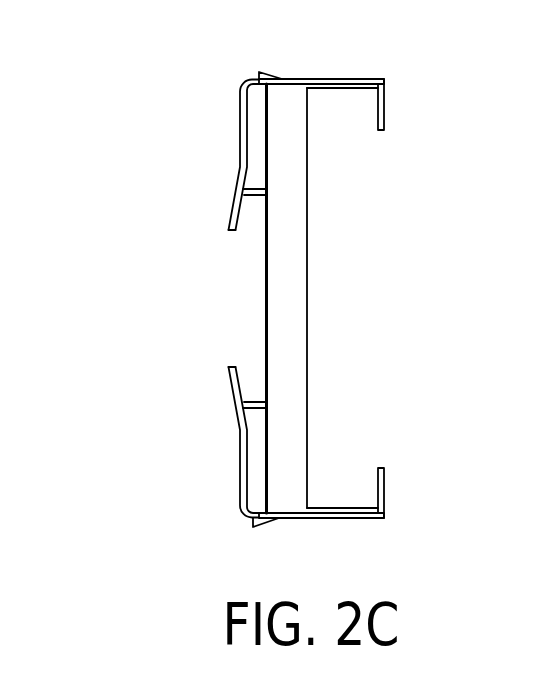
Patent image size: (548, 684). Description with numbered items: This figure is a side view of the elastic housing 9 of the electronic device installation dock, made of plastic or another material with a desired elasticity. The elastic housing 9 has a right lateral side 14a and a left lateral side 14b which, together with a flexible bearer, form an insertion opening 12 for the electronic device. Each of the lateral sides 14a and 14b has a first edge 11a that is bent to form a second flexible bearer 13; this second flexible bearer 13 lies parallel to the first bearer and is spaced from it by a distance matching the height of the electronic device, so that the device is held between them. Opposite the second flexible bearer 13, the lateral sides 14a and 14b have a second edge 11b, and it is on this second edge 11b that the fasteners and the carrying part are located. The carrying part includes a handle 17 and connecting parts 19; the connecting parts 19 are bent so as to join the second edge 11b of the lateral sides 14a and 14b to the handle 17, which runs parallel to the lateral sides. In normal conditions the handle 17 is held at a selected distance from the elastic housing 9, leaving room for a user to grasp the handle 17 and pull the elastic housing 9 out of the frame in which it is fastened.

The elastic housing 9 is at (134, 287).
The first edge 11a is at (384, 79).
The second edge 11b is at (260, 72).
The insertion opening 12 is at (343, 488).
The second flexible bearer 13 is at (384, 478).
The right lateral side 14a is at (333, 79).
The left lateral side 14b is at (318, 518).
The handle 17 is at (229, 225).
The connecting part 19 is at (240, 133).